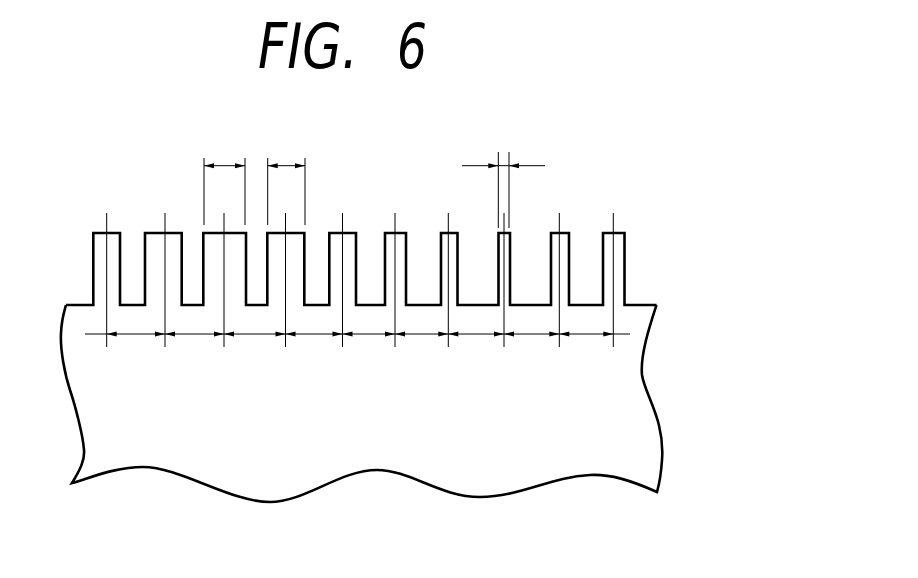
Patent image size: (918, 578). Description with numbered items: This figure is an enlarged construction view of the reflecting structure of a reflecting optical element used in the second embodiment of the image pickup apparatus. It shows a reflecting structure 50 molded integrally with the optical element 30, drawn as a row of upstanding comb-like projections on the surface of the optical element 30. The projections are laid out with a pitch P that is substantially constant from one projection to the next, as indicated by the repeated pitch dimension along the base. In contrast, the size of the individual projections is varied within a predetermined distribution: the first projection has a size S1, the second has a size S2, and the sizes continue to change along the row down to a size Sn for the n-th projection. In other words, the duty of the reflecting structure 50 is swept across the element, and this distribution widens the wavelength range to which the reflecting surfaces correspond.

The reflecting structure 50 is at (642, 269).
The optical element 30 is at (638, 398).
The pitch P is at (357, 294).
The size of the first element of the reflecting structure S1 is at (224, 175).
The size of the second element of the reflecting structure S2 is at (286, 175).
The size of the n-th element of the reflecting structure Sn is at (503, 176).